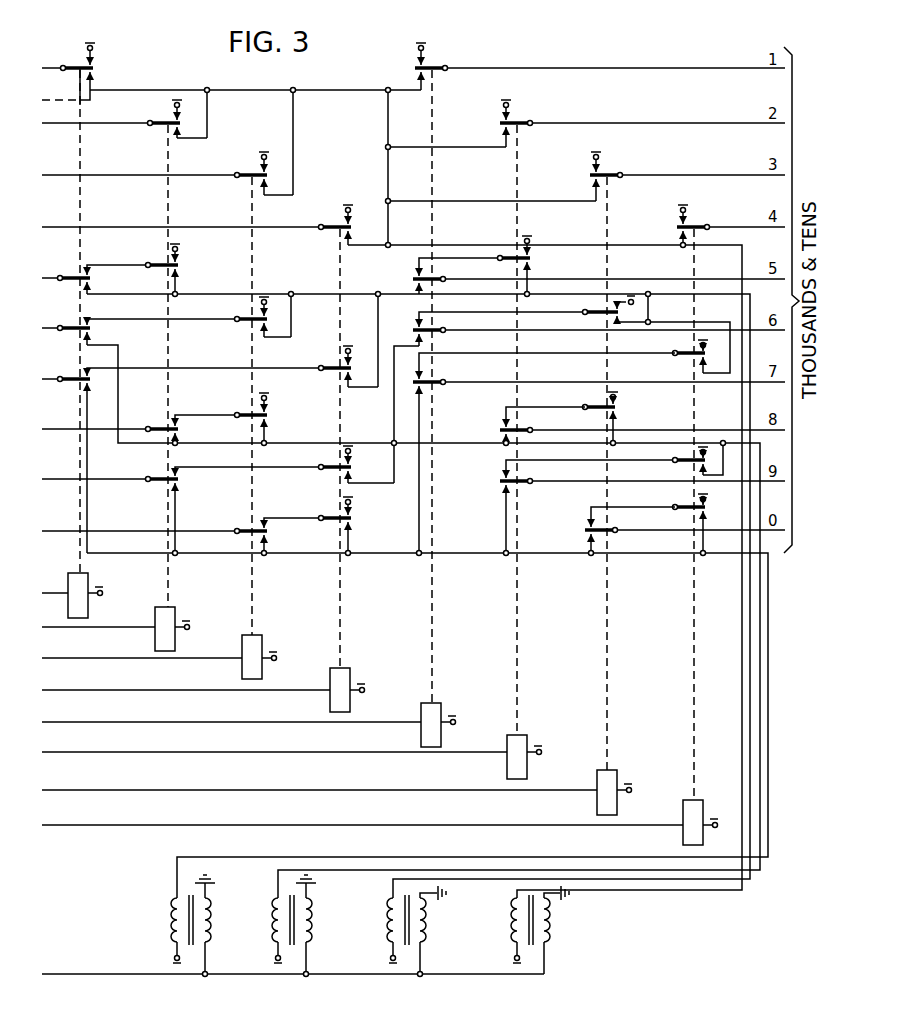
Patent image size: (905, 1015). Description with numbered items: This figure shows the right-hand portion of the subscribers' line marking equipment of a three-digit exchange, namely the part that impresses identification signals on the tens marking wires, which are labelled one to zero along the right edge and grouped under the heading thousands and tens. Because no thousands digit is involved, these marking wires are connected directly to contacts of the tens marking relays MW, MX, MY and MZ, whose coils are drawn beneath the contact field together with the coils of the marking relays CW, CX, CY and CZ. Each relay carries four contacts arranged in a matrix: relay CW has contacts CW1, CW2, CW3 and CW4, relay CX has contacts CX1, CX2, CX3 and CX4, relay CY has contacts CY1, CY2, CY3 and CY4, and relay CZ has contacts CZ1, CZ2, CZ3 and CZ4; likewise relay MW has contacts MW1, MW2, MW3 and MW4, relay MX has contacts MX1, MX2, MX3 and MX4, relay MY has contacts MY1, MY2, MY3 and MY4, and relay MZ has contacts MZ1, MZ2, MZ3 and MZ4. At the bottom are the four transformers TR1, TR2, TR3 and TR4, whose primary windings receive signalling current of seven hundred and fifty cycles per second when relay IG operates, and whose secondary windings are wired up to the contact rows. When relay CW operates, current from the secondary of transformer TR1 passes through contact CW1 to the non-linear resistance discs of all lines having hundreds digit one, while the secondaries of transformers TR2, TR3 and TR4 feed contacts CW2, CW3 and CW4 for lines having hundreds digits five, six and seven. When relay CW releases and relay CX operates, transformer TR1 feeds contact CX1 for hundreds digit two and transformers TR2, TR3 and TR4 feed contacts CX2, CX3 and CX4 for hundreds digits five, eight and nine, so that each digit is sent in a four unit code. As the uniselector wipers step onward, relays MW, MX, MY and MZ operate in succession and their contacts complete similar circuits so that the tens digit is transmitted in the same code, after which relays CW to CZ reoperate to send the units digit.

The contact of relay CW CW1 is at (80, 65).
The contact of relay CX CX1 is at (165, 120).
The contact of relay CY CY1 is at (250, 171).
The contact of relay CZ CZ1 is at (335, 222).
The contact of relay CW CW2 is at (74, 276).
The contact of relay CX CX2 is at (162, 262).
The contact of relay CY CY2 is at (239, 315).
The contact of relay CZ CZ2 is at (324, 364).
The contact of relay CW CW3 is at (74, 326).
The contact of relay CX CX3 is at (162, 425).
The contact of relay CY CY3 is at (240, 410).
The contact of relay CZ CZ3 is at (324, 463).
The contact of relay CW CW4 is at (74, 377).
The contact of relay CX CX4 is at (162, 474).
The contact of relay CY CY4 is at (240, 527).
The contact of relay CZ CZ4 is at (324, 515).
The contact of relay MW MW1 is at (438, 60).
The contact of relay MX MX1 is at (518, 114).
The contact of relay MY MY1 is at (607, 168).
The contact of relay MZ MZ1 is at (696, 221).
The contact of relay MW MW2 is at (410, 276).
The contact of relay MX MX2 is at (531, 258).
The contact of relay MY MY2 is at (584, 313).
The contact of relay MZ MZ2 is at (676, 360).
The contact of relay MW MW3 is at (438, 328).
The contact of relay MX MX3 is at (523, 428).
The contact of relay MY MY3 is at (586, 400).
The contact of relay MZ MZ3 is at (676, 456).
The contact of relay MW MW4 is at (438, 380).
The contact of relay MX MX4 is at (523, 479).
The contact of relay MY MY4 is at (614, 528).
The contact of relay MZ MZ4 is at (676, 500).
The marking relay CW is at (90, 585).
The marking relay CX is at (177, 617).
The marking relay CY is at (264, 645).
The marking relay CZ is at (352, 678).
The tens marking relay MW is at (440, 713).
The tens marking relay MX is at (527, 745).
The tens marking relay MY is at (617, 780).
The tens marking relay MZ is at (704, 810).
The transformer TR1 is at (168, 928).
The transformer TR2 is at (276, 929).
The transformer TR3 is at (386, 929).
The transformer TR4 is at (508, 929).